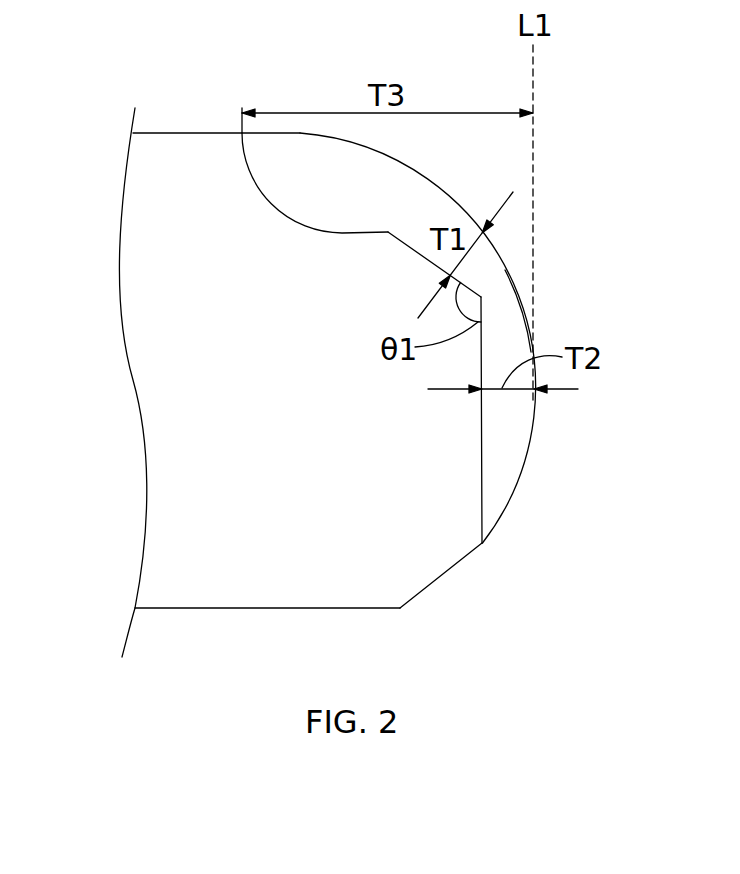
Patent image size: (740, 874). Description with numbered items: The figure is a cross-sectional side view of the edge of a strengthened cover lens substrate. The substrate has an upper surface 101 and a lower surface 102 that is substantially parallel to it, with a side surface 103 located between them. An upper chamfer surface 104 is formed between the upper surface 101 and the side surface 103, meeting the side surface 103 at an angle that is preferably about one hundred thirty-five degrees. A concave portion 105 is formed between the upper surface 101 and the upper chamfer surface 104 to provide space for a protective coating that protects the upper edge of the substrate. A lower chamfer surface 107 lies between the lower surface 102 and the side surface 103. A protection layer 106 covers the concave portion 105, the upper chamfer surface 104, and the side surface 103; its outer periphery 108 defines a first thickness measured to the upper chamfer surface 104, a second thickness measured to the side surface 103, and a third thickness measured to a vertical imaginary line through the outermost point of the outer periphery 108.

The upper surface 101 is at (188, 133).
The lower surface 102 is at (270, 608).
The side surface 103 is at (483, 468).
The upper chamfer surface 104 is at (465, 288).
The concave portion 105 is at (335, 231).
The protection layer 106 is at (503, 487).
The lower chamfer surface 107 is at (447, 572).
The outer periphery 108 is at (527, 313).